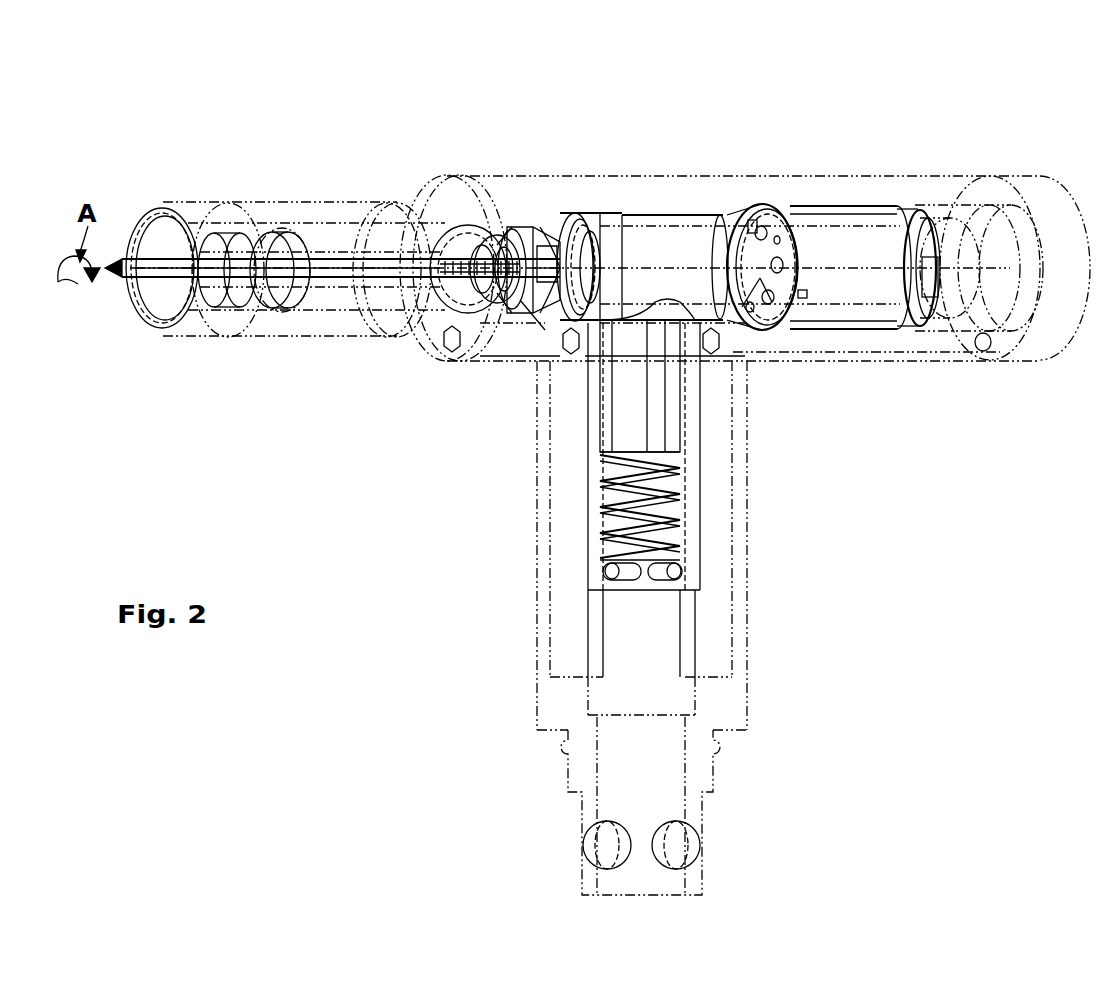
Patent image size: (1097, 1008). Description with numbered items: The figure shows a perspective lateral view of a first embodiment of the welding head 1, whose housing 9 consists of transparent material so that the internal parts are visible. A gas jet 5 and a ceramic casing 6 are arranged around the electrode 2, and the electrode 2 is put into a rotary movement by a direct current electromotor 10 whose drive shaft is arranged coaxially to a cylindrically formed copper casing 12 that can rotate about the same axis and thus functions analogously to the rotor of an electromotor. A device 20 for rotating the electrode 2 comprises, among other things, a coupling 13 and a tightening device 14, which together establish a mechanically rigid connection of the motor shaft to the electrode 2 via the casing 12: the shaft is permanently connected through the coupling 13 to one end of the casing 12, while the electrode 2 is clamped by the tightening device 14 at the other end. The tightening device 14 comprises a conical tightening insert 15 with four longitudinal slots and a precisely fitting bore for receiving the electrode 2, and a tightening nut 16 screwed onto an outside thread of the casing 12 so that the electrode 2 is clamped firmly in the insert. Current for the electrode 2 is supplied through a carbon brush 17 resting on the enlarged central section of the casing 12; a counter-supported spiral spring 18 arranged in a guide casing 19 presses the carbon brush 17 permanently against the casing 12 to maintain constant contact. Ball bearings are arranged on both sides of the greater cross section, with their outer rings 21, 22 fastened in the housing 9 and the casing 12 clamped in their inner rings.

The welding head 1 is at (990, 117).
The electrode 2 is at (165, 262).
The gas jet 5 is at (228, 238).
The ceramic casing 6 is at (328, 212).
The housing 9 is at (884, 364).
The direct current electromotor 10 is at (843, 240).
The copper casing 12 is at (665, 242).
The coupling 13 is at (763, 328).
The tightening device 14 is at (598, 152).
The tightening insert 15 is at (545, 303).
The tightening nut 16 is at (515, 303).
The carbon brush 17 is at (660, 415).
The spiral spring 18 is at (625, 545).
The guide casing 19 is at (695, 522).
The device for rotating the electrode 20 is at (940, 95).
The outer ring 21 is at (608, 232).
The outer ring 22 is at (728, 226).